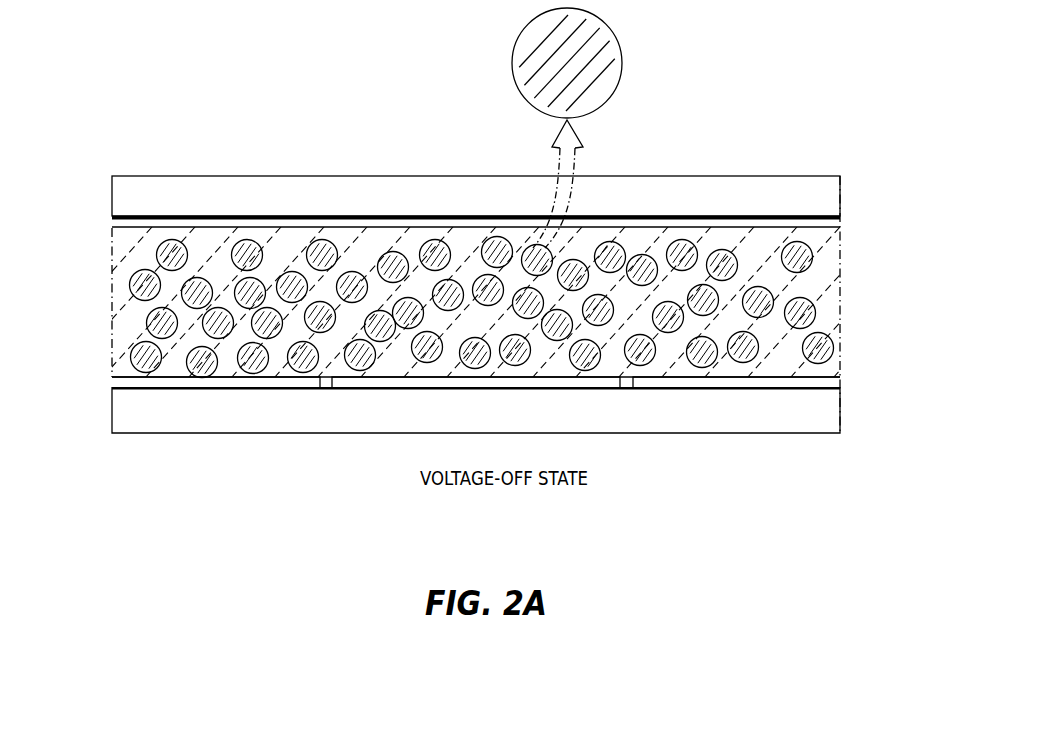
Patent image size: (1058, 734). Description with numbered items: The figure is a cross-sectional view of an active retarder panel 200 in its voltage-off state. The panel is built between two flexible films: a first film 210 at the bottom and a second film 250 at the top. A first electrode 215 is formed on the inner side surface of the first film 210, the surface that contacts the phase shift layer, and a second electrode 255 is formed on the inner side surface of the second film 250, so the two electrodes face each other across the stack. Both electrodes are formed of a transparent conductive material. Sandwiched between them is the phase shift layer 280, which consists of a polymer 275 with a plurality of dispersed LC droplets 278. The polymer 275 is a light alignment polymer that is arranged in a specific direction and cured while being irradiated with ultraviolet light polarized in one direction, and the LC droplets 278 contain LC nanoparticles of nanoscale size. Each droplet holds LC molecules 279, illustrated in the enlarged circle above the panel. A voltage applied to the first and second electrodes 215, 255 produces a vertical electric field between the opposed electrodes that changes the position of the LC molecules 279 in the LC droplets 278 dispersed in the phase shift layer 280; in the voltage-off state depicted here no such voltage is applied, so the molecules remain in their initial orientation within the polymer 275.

The active retarder panel 200 is at (770, 110).
The first film 210 is at (820, 418).
The first electrode 215 is at (843, 383).
The second film 250 is at (822, 186).
The second electrode 255 is at (830, 216).
The polymer 275 is at (823, 277).
The LC droplets 278 is at (816, 313).
The LC molecules 279 is at (593, 87).
The phase shift layer 280 is at (112, 228).